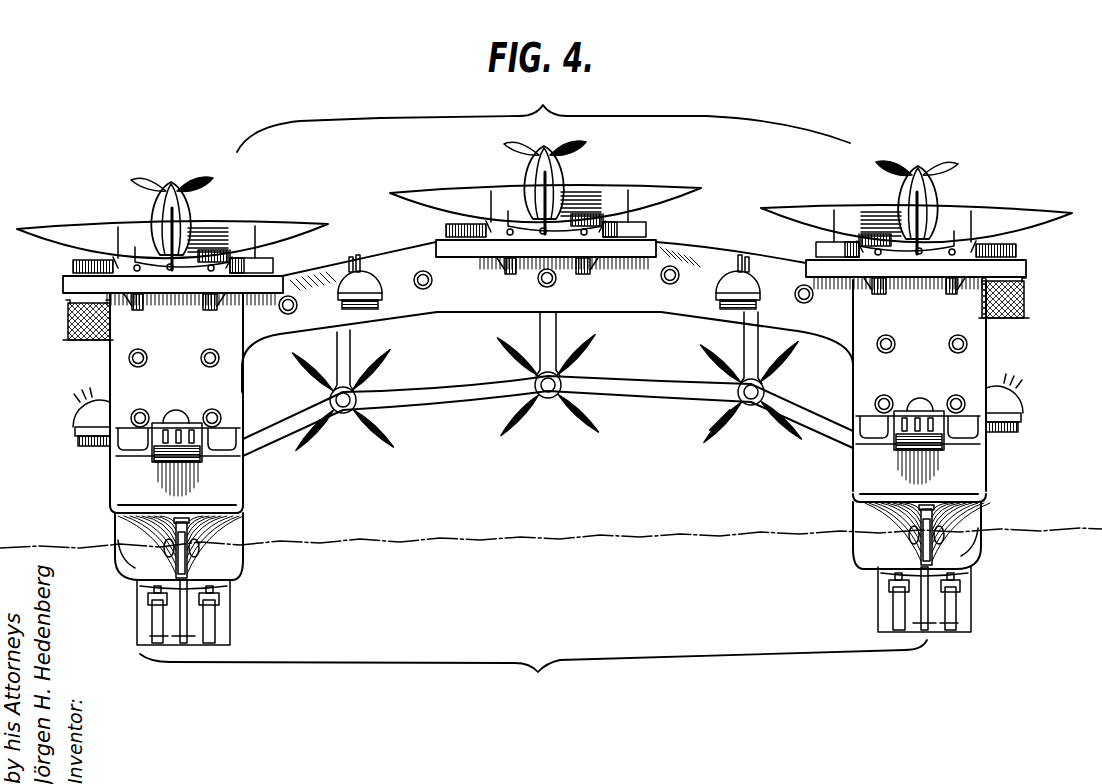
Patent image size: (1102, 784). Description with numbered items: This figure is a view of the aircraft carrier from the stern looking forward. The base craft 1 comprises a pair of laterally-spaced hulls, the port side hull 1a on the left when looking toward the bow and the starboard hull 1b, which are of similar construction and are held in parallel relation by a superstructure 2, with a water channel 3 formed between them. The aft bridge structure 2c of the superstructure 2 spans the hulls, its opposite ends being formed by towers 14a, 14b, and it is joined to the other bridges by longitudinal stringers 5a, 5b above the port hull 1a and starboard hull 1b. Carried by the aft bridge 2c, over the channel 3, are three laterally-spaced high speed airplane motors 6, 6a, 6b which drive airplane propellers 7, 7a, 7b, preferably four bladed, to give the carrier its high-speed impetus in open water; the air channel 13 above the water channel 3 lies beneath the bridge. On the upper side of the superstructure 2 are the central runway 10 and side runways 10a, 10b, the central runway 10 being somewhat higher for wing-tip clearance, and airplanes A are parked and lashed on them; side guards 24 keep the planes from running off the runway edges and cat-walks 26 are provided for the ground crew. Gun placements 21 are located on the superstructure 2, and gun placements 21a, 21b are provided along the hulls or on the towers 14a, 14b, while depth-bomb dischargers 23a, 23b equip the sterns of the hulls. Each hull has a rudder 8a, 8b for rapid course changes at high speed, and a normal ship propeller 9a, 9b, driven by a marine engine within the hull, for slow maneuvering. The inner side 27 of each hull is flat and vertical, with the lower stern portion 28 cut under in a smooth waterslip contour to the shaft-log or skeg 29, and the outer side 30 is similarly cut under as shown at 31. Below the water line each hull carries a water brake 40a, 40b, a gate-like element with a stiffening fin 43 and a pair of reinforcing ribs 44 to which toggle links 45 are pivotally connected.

The base craft 1 is at (530, 696).
The port side hull 1a is at (112, 470).
The starboard hull 1b is at (973, 475).
The superstructure 2 is at (543, 118).
The aft bridge structure 2c is at (677, 250).
The channel 3 is at (524, 523).
The longitudinal stringer 5a is at (217, 299).
The longitudinal stringer 5b is at (880, 296).
The airplane motor 6 is at (562, 381).
The airplane motor 6a is at (358, 394).
The airplane motor 6b is at (766, 393).
The airplane propeller 7 is at (527, 411).
The airplane propeller 7a is at (377, 434).
The airplane propeller 7b is at (788, 432).
The rudder 8a is at (247, 557).
The rudder 8b is at (930, 524).
The ship propeller 9a is at (188, 541).
The ship propeller 9b is at (918, 551).
The central airplane runway 10 is at (545, 259).
The side airplane runway 10a is at (192, 295).
The side airplane runway 10b is at (930, 279).
The air channel 13 is at (453, 352).
The tower 14a is at (244, 388).
The tower 14b is at (853, 393).
The gun placement 21 is at (376, 281).
The gun placement 21a is at (86, 418).
The gun placement 21b is at (1010, 400).
The depth-bomb discharger 23a is at (180, 460).
The depth-bomb discharger 23b is at (913, 447).
The side guard 24 is at (73, 266).
The cat-walk 26 is at (68, 331).
The inner side of hull 27 is at (245, 479).
The lower stern portion 28 is at (217, 579).
The shaft-log or skeg 29 is at (180, 589).
The outer side of hull 30 is at (113, 523).
The cut-under portion 31 is at (137, 556).
The water brake 40a is at (230, 644).
The water brake 40b is at (902, 610).
The stiffening fin 43 is at (188, 633).
The reinforcing rib 44 is at (215, 622).
The toggle link 45 is at (160, 644).
The airplane A is at (187, 220).